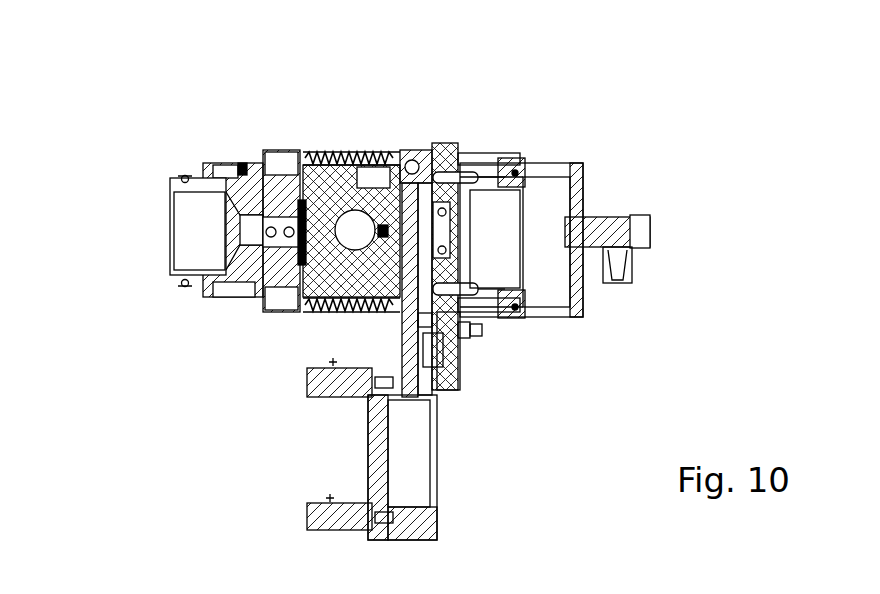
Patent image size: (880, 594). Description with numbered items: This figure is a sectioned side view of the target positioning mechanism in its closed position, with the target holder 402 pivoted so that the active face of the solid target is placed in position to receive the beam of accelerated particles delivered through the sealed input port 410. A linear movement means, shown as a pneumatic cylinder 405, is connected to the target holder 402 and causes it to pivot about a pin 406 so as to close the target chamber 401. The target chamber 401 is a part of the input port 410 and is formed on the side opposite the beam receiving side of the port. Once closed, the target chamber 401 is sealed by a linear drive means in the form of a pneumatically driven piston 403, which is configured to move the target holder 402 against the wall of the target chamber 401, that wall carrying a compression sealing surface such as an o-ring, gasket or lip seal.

The target chamber 401 is at (265, 152).
The target holder 402 is at (335, 185).
The pneumatically driven piston 403 is at (492, 240).
The pneumatic cylinder 405 is at (412, 460).
The pin 406 is at (304, 315).
The sealed input port 410 is at (165, 284).